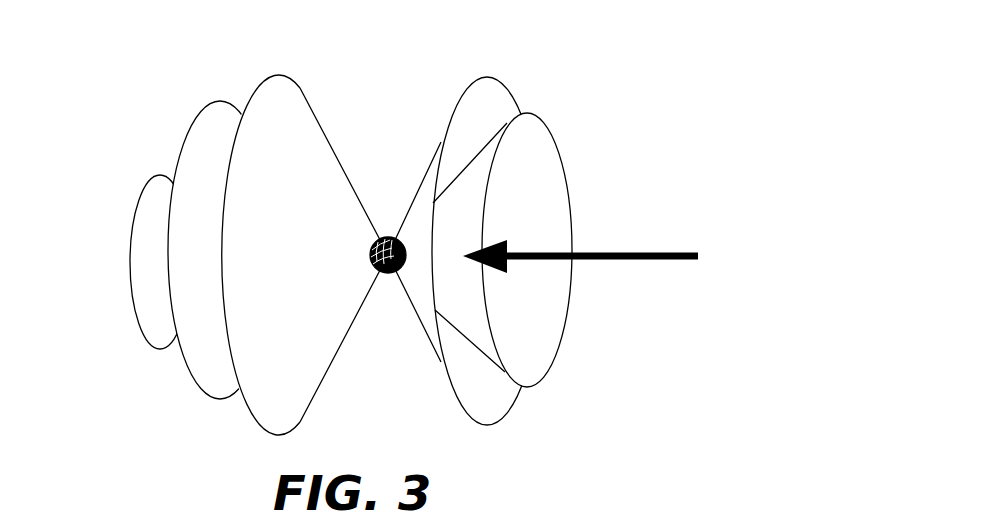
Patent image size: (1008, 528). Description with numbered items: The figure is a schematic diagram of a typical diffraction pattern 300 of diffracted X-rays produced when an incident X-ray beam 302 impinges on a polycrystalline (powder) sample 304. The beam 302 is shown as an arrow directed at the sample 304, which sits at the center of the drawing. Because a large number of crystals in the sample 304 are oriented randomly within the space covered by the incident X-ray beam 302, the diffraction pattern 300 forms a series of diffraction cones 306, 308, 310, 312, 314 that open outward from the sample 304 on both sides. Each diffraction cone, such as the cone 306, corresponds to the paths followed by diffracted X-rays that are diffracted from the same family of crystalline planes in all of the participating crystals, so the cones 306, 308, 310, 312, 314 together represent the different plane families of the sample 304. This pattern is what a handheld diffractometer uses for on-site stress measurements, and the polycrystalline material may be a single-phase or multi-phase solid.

The diffraction pattern 300 is at (738, 82).
The incident X-ray beam 302 is at (660, 260).
The polycrystalline sample 304 is at (387, 238).
The diffraction cone 306 is at (270, 99).
The diffraction cone 308 is at (190, 163).
The diffraction cone 310 is at (147, 255).
The diffraction cone 312 is at (492, 80).
The diffraction cone 314 is at (567, 178).